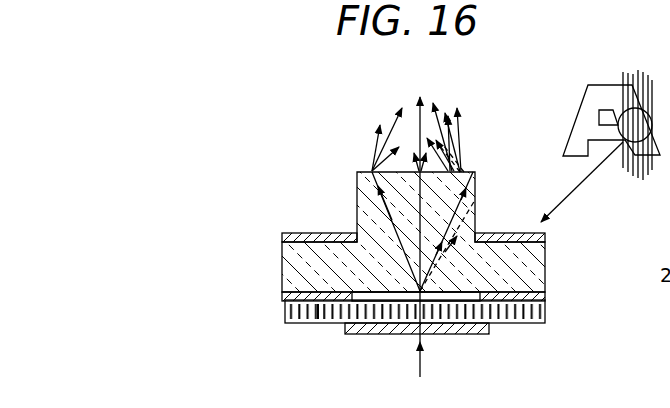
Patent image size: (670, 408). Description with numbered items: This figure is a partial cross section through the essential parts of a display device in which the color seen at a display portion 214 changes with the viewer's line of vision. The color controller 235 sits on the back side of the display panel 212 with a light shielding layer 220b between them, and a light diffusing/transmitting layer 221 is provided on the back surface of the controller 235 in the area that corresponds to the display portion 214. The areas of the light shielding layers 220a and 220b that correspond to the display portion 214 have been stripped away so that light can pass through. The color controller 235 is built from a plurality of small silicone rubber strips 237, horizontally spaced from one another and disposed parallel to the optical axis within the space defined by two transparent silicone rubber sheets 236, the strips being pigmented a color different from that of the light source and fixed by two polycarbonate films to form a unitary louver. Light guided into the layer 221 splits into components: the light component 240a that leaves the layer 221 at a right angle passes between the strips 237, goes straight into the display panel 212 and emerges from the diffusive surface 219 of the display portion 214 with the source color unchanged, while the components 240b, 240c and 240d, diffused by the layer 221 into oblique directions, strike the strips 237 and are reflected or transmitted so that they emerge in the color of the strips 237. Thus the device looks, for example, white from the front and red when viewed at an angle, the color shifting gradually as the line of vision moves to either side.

The display panel 212 is at (282, 270).
The display portion 214 is at (353, 200).
The diffusive surface 219 is at (358, 171).
The light shielding layer 220a is at (545, 238).
The light shielding layer 220b is at (545, 295).
The light diffusing/transmitting layer 221 is at (403, 334).
The color controller 235 is at (285, 312).
The transparent silicone rubber sheet 236 is at (318, 325).
The silicone rubber strip 237 is at (307, 323).
The light component 240a is at (420, 218).
The light component 240b is at (372, 222).
The light component 240c is at (431, 272).
The light component 240d is at (443, 162).